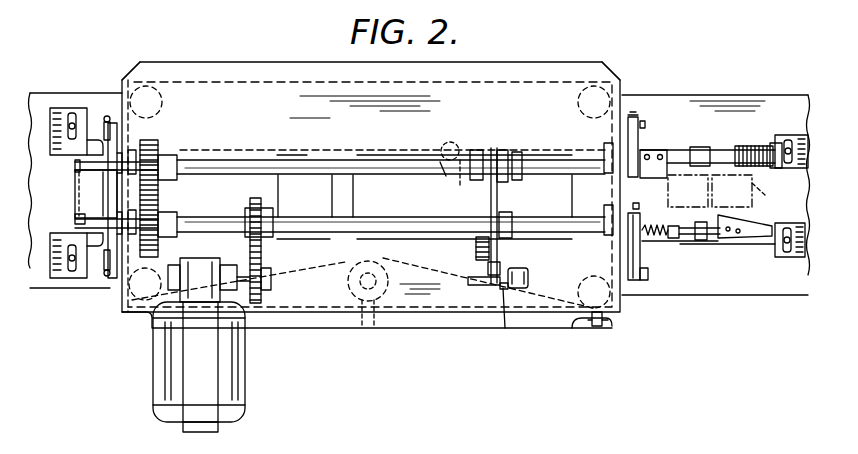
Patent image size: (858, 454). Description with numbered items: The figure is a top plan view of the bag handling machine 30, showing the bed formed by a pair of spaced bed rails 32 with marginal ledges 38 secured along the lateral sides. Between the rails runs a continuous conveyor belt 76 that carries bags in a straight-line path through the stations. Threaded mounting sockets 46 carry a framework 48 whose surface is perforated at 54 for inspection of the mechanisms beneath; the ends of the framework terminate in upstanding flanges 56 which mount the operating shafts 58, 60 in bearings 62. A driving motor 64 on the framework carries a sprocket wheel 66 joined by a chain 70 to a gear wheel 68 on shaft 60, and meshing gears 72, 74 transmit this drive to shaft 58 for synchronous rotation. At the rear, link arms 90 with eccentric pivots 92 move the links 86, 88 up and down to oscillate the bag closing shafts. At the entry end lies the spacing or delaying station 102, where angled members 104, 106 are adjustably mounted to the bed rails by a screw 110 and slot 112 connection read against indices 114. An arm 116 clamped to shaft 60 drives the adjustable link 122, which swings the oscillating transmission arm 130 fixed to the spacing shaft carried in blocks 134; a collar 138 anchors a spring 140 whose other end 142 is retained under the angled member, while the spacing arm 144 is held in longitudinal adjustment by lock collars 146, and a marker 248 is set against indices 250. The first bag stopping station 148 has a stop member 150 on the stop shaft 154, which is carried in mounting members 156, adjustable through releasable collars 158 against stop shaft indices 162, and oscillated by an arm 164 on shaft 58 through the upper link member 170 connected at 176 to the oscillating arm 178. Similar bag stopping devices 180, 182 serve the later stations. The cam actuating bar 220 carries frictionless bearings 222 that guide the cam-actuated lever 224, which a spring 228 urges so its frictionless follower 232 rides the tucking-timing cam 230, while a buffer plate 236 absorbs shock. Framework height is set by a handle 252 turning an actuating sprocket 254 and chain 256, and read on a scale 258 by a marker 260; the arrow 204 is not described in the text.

The bag handling machine 30 is at (431, 344).
The bed rails 32 is at (55, 93).
The marginal ledges 38 is at (517, 63).
The mounting socket 46 is at (152, 92).
The framework 48 is at (328, 316).
The perforations 54 is at (352, 190).
The upstanding flanges 56 is at (613, 77).
The operating shaft 58 is at (205, 168).
The operating shaft 60 is at (208, 216).
The bearings 62 is at (133, 145).
The driving motor 64 is at (245, 375).
The sprocket wheel 66 is at (264, 289).
The gear wheel 68 is at (270, 210).
The chain 70 is at (264, 246).
The meshing gear 72 is at (163, 238).
The meshing gear 74 is at (164, 150).
The conveyor belt 76 is at (77, 200).
The link 86 is at (107, 117).
The link 88 is at (107, 274).
The link arm 90 is at (112, 175).
The pivots 92 is at (77, 165).
The spacing or delaying station 102 is at (696, 288).
The angled member 104 is at (80, 176).
The angled member 106 is at (80, 220).
The screw 110 is at (76, 113).
The slot 112 is at (70, 108).
The indices 114 is at (53, 100).
The arm 116 is at (647, 207).
The adjustable link 122 is at (647, 280).
The oscillating transmission arm 130 is at (630, 280).
The blocks 134 is at (703, 222).
The collar 138 is at (678, 240).
The spring 140 is at (655, 240).
The spring end 142 is at (648, 244).
The delay or spacing arm 144 is at (755, 240).
The lock collars 146 is at (708, 240).
The first bag stopping station 148 is at (692, 104).
The stop member 150 is at (657, 150).
The stop shaft 154 is at (682, 150).
The mounting members 156 is at (703, 148).
The releasable collars 158 is at (740, 146).
The stop shaft indices 162 is at (757, 150).
The arm 164 is at (642, 178).
The upper link member 170 is at (634, 117).
The swingable connection 176 is at (645, 123).
The oscillating arm 178 is at (633, 112).
The bag stopping device 180 is at (459, 143).
The bag stopping device 182 is at (186, 150).
The direction arrow 204 is at (790, 193).
The cam actuating bar 220 is at (505, 329).
The frictionless bearings 222 is at (480, 286).
The cam-actuated lever 224 is at (498, 202).
The spring 228 is at (476, 252).
The bag tucking-timing cam 230 is at (500, 268).
The frictionless follower 232 is at (512, 240).
The buffer plate 236 is at (528, 282).
The marker 248 is at (690, 205).
The indices 250 is at (700, 246).
The handle 252 is at (376, 325).
The actuating sprocket 254 is at (390, 281).
The chain 256 is at (266, 82).
The scale 258 is at (609, 330).
The marker 260 is at (590, 326).